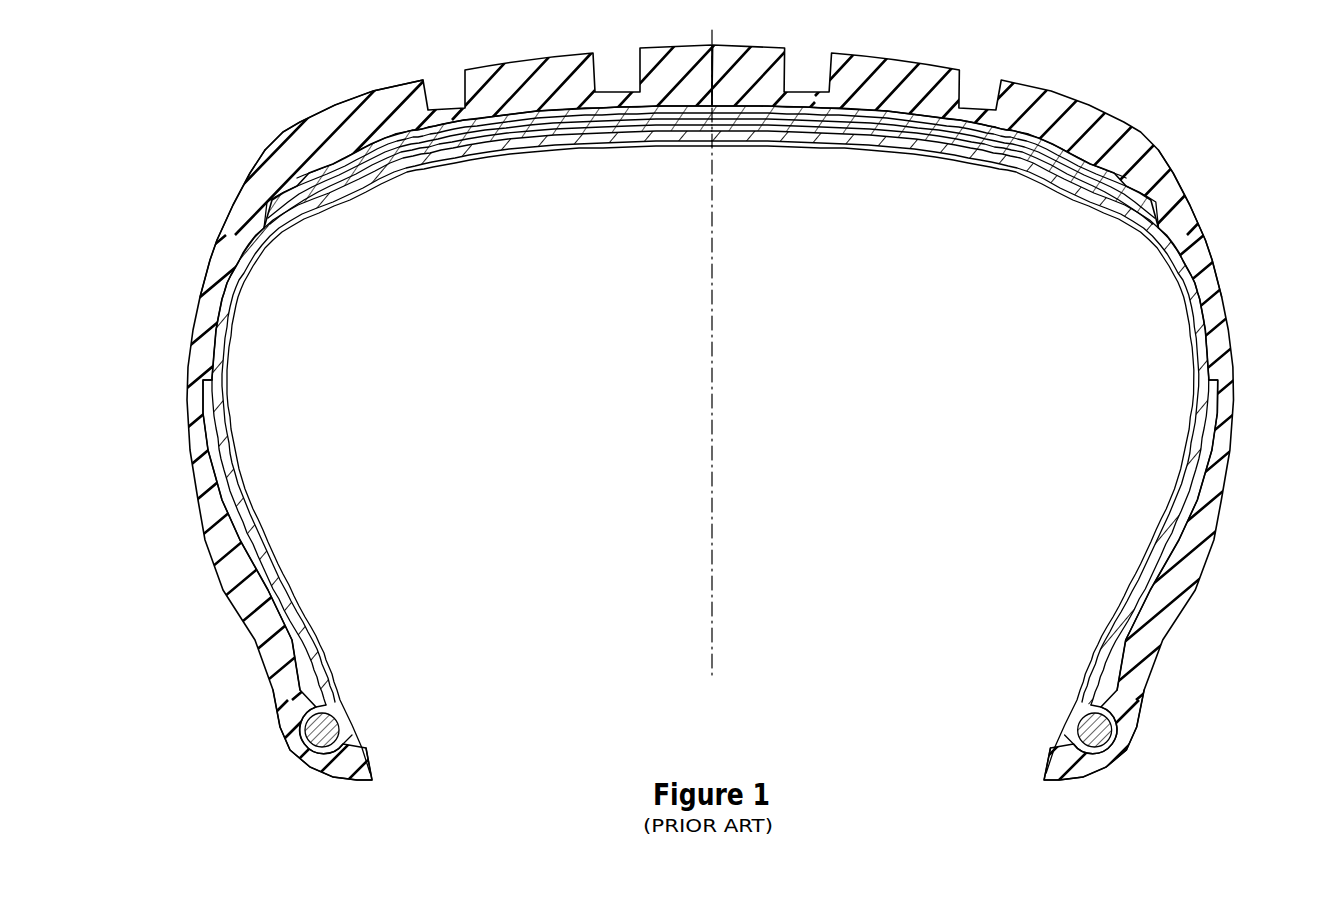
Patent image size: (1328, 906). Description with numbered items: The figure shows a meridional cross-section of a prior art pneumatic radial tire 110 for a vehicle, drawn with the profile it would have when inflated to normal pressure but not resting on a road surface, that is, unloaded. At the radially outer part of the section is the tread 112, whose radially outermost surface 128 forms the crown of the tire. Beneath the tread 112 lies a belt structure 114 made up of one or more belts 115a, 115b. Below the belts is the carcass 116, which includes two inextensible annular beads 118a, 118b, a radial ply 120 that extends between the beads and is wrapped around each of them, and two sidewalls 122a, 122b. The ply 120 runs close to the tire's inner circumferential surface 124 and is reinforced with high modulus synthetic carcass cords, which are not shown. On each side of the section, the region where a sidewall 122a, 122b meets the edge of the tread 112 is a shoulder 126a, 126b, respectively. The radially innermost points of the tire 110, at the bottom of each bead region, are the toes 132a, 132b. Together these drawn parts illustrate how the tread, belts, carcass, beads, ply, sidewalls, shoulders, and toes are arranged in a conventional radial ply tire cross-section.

The pneumatic radial tire 110 is at (822, 184).
The tread 112 is at (523, 73).
The belt structure 114 is at (880, 127).
The belt 115a is at (950, 138).
The belt 115b is at (987, 147).
The carcass 116 is at (1070, 167).
The bead 118a is at (330, 730).
The bead 118b is at (1088, 735).
The radial ply 120 is at (1103, 202).
The sidewall 122a is at (197, 435).
The sidewall 122b is at (1222, 414).
The inner circumferential surface 124 is at (633, 143).
The shoulder 126a is at (250, 173).
The shoulder 126b is at (1160, 150).
The radially outermost surface of the tread 128 is at (367, 92).
The toe 132a is at (373, 780).
The toe 132b is at (1045, 780).